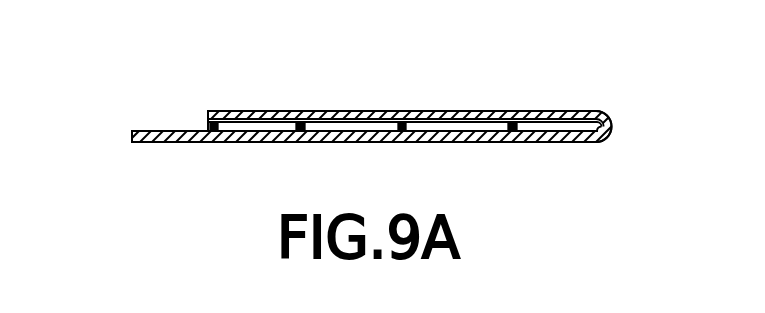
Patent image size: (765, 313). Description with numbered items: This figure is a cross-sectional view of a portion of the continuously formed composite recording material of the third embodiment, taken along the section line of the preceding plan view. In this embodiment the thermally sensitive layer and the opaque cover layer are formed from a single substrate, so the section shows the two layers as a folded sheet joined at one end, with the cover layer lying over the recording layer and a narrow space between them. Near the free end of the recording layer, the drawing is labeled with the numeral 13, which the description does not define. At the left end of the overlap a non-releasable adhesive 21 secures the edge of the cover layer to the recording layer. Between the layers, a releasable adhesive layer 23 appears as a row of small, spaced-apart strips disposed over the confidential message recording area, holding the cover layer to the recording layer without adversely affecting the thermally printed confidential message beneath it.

The flexible substrate / base layer end 13 is at (138, 124).
The non-releasable adhesive 21 is at (207, 127).
The releasable adhesive layer 23 is at (506, 129).